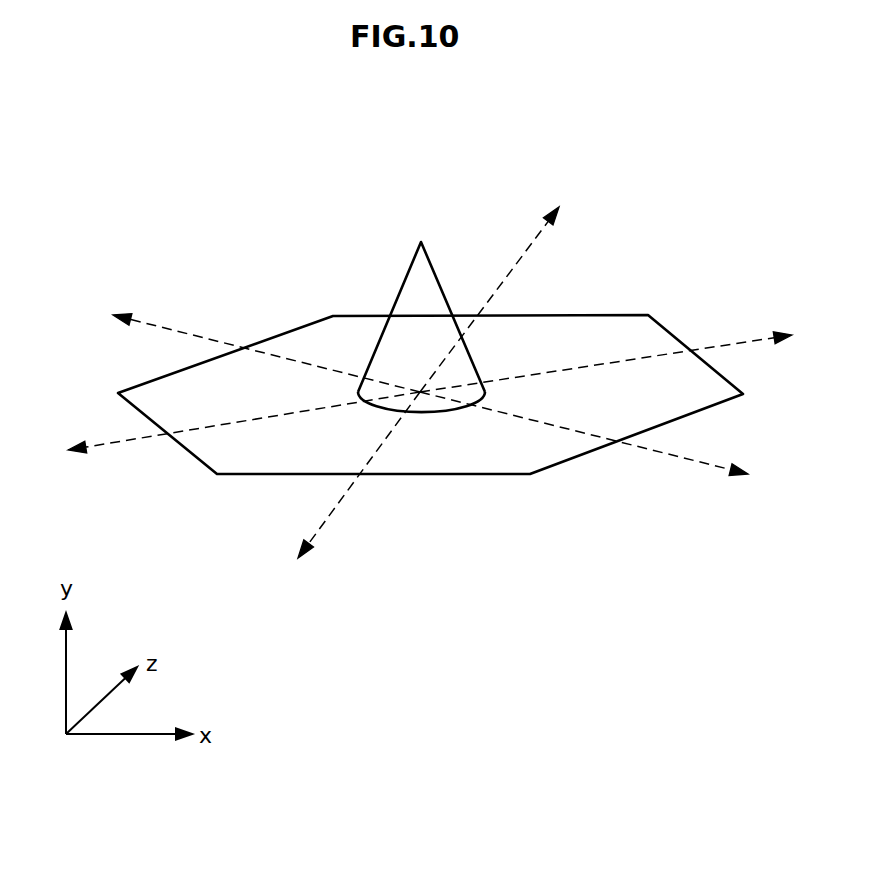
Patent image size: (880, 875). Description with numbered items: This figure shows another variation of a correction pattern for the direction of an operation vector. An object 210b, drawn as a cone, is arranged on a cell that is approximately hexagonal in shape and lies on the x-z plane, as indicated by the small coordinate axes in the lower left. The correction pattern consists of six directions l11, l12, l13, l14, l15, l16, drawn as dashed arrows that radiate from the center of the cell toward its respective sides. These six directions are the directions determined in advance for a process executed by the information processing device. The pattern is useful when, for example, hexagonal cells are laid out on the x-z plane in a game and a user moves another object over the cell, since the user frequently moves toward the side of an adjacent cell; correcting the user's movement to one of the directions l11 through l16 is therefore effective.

The object 210b is at (408, 262).
The direction l11 is at (515, 262).
The direction l12 is at (733, 343).
The direction l13 is at (675, 457).
The direction l14 is at (342, 502).
The direction l15 is at (127, 442).
The direction l16 is at (170, 329).